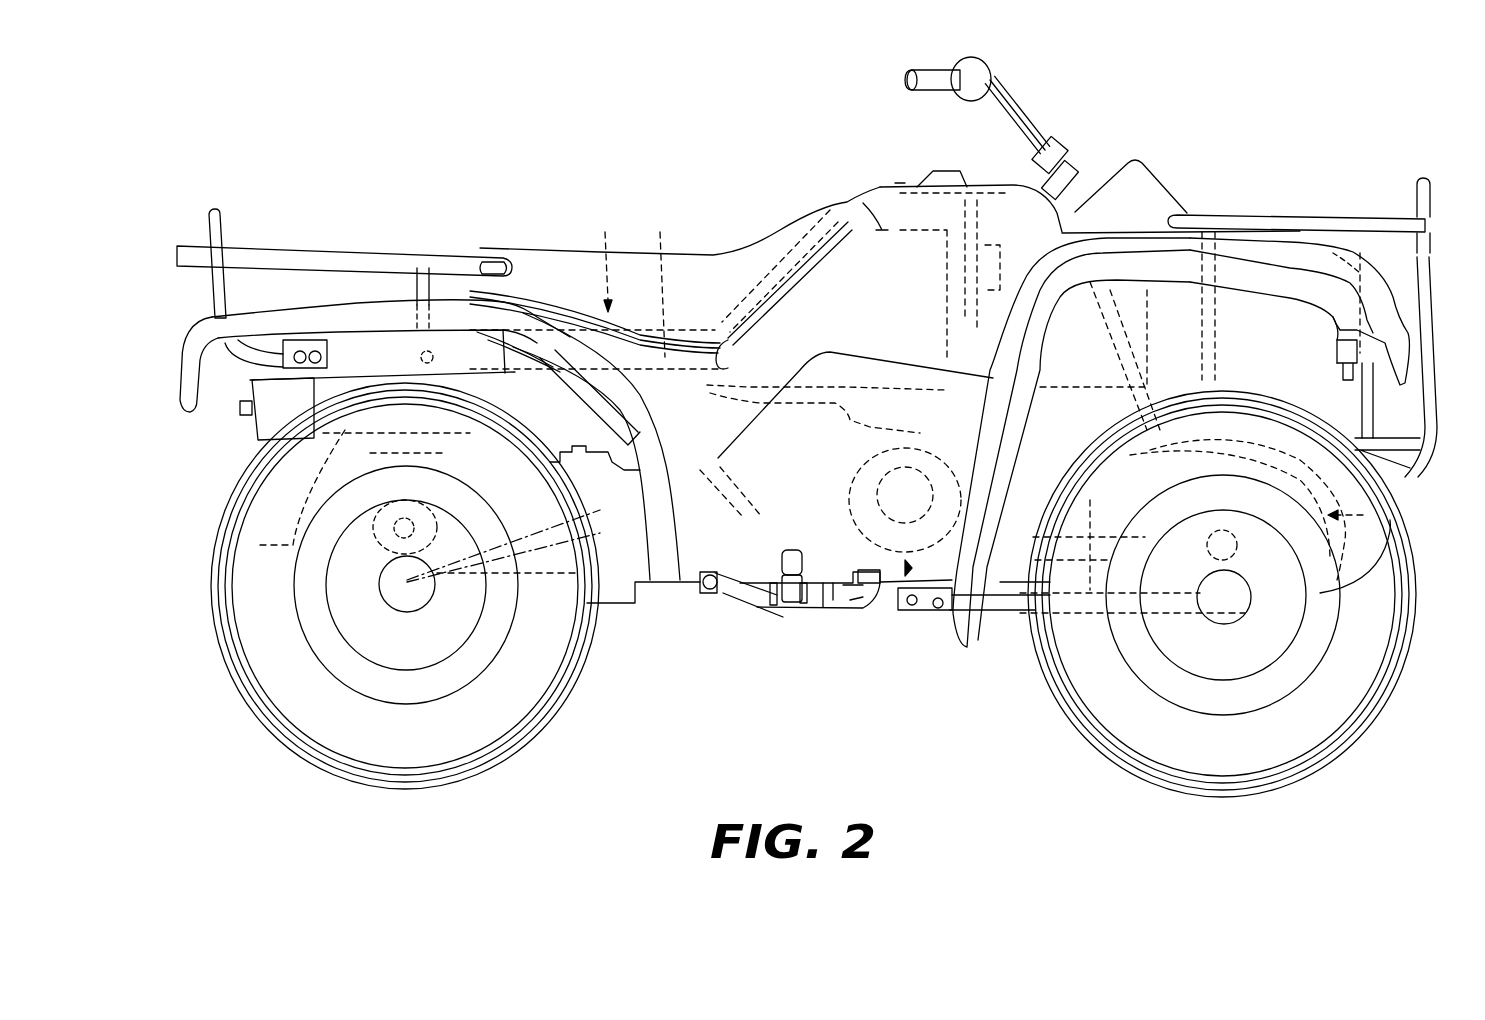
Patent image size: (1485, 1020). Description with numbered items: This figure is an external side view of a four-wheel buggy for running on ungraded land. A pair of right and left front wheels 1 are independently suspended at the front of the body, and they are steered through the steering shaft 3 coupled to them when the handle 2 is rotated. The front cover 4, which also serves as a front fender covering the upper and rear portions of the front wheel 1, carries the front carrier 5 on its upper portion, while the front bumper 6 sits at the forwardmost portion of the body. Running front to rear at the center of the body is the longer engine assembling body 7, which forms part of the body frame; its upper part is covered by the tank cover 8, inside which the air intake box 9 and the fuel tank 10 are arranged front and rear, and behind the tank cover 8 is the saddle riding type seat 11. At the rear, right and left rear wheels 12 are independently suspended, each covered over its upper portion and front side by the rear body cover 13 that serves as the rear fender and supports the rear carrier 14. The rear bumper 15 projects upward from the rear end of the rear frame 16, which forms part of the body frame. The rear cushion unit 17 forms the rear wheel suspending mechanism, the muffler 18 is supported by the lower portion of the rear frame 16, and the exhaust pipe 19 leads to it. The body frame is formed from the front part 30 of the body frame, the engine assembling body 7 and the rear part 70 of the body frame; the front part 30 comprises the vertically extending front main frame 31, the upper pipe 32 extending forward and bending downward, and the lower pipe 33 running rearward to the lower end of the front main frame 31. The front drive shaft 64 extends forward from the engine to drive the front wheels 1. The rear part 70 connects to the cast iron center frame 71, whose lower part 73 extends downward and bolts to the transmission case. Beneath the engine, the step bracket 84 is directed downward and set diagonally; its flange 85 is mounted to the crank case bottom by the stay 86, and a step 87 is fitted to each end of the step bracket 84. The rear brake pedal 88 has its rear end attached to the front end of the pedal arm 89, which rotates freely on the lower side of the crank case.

The front wheel 1 is at (1378, 712).
The handle 2 is at (1023, 113).
The steering shaft 3 is at (1080, 213).
The front cover 4 is at (1307, 253).
The front carrier 5 is at (1363, 216).
The front bumper 6 is at (1405, 280).
The engine assembling body 7 is at (922, 612).
The tank cover 8 is at (898, 183).
The air intake box 9 is at (990, 240).
The fuel tank 10 is at (863, 203).
The saddle riding type seat 11 is at (717, 260).
The rear wheel 12 is at (586, 665).
The rear body cover 13 is at (361, 303).
The rear carrier 14 is at (313, 253).
The rear bumper 15 is at (225, 210).
The rear frame 16 is at (340, 350).
The rear cushion unit 17 is at (530, 375).
The muffler 18 is at (265, 412).
The exhaust pipe 19 is at (603, 450).
The front part of the body frame 30 is at (1408, 518).
The front main frame 31 is at (1100, 498).
The upper pipe 32 is at (1236, 378).
The lower pipe 33 is at (977, 643).
The front drive shaft 64 is at (1022, 628).
The rear part of the body frame 70 is at (601, 259).
The center frame 71 is at (657, 282).
The lower part 73 is at (700, 415).
The step bracket 84 is at (790, 590).
The flange 85 is at (817, 607).
The stay 86 is at (747, 590).
The step 87 is at (770, 593).
The rear brake pedal 88 is at (880, 583).
The pedal arm 89 is at (707, 593).